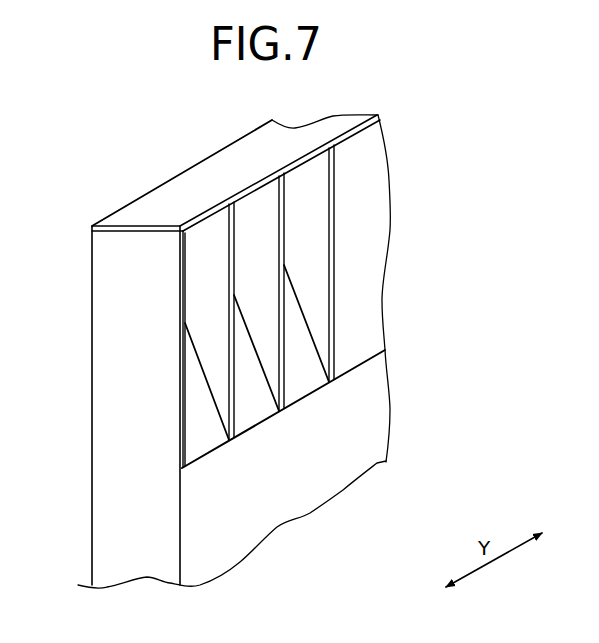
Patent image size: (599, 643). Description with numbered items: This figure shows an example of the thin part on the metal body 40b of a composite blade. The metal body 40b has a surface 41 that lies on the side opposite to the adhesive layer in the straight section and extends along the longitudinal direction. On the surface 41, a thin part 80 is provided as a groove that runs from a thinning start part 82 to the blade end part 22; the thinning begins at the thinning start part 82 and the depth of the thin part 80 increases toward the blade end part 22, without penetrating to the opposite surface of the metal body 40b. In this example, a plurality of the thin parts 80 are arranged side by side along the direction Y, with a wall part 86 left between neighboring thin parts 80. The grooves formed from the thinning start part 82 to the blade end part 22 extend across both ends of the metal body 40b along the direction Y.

The blade end part 22 is at (132, 223).
The metal body 40b is at (427, 134).
The wall part 86 is at (209, 251).
The thin part 80 is at (196, 419).
The thinning start part 82 is at (183, 471).
The surface 41 is at (367, 445).